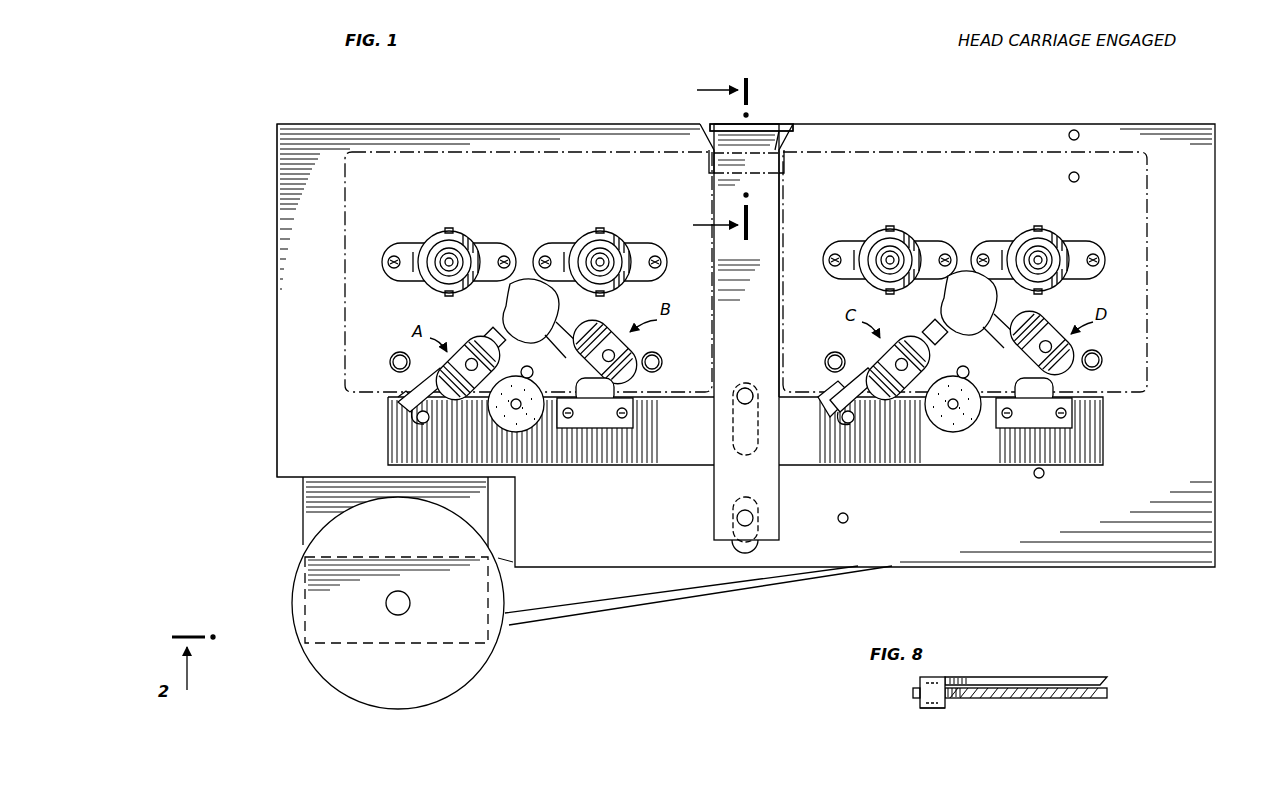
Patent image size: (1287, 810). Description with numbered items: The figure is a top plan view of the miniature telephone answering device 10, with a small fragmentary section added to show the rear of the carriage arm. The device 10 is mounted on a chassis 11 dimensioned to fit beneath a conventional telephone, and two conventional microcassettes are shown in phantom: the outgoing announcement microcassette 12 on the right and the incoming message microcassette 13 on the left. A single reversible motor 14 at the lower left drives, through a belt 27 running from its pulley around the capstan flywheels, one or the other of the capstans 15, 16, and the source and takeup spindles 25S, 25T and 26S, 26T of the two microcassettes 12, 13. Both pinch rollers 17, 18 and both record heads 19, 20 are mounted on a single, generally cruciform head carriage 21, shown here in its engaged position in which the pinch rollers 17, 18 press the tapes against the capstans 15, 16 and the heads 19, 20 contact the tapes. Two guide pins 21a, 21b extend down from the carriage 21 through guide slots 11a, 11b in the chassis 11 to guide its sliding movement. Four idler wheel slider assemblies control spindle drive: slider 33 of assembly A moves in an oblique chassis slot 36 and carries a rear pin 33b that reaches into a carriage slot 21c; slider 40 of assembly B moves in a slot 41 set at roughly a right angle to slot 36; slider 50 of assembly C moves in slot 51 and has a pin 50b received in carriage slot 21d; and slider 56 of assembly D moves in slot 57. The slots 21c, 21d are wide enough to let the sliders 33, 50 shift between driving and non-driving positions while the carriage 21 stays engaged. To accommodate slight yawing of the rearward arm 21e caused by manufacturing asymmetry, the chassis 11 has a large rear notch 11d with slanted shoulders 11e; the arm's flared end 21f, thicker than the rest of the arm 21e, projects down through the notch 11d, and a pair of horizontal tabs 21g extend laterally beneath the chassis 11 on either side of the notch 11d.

In FIG. 1, the telephone answering device 10 is at (268, 197).
In FIG. 1, the chassis 11 is at (1165, 132).
In FIG. 8, the chassis 11 is at (1064, 700).
In FIG. 1, the guide slot 11a is at (759, 548).
In FIG. 1, the guide slot 11b is at (758, 433).
In FIG. 1, the notch 11d is at (710, 167).
In FIG. 1, the slanted shoulders 11e is at (699, 135).
In FIG. 8, the slanted shoulders 11e is at (958, 698).
In FIG. 1, the outgoing announcement microcassette 12 is at (1150, 186).
In FIG. 1, the incoming message microcassette 13 is at (633, 151).
In FIG. 1, the motor 14 is at (398, 603).
In FIG. 1, the capstan 15 is at (965, 368).
In FIG. 1, the capstan 16 is at (534, 373).
In FIG. 1, the pinch roller 17 is at (946, 425).
In FIG. 1, the pinch roller 18 is at (510, 420).
In FIG. 1, the record head 19 is at (1024, 425).
In FIG. 1, the record head 20 is at (596, 420).
In FIG. 1, the head carriage 21 is at (922, 443).
In FIG. 1, the guide pin 21a is at (732, 517).
In FIG. 1, the guide pin 21b is at (757, 366).
In FIG. 1, the slot 21c is at (408, 397).
In FIG. 1, the slot 21d is at (834, 394).
In FIG. 1, the rearward arm 21e is at (768, 240).
In FIG. 8, the rearward arm 21e is at (1087, 680).
In FIG. 1, the flared end 21f is at (780, 131).
In FIG. 8, the flared end 21f is at (920, 684).
In FIG. 1, the horizontal tabs 21g is at (797, 150).
In FIG. 8, the horizontal tabs 21g is at (926, 708).
In FIG. 1, the source spindle 25S is at (1046, 252).
In FIG. 1, the takeup spindle 25T is at (890, 249).
In FIG. 1, the source spindle 26S is at (605, 250).
In FIG. 1, the takeup spindle 26T is at (445, 249).
In FIG. 1, the belt 27 is at (655, 597).
In FIG. 1, the slider 33 is at (497, 358).
In FIG. 1, the pin 33b is at (417, 417).
In FIG. 1, the oblique slot 36 is at (480, 340).
In FIG. 1, the slider 40 is at (630, 345).
In FIG. 1, the slot 41 is at (585, 306).
In FIG. 1, the slider 50 is at (893, 361).
In FIG. 1, the pin 50b is at (850, 432).
In FIG. 1, the slot 51 is at (921, 335).
In FIG. 1, the slider 56 is at (1031, 363).
In FIG. 1, the slot 57 is at (1028, 311).